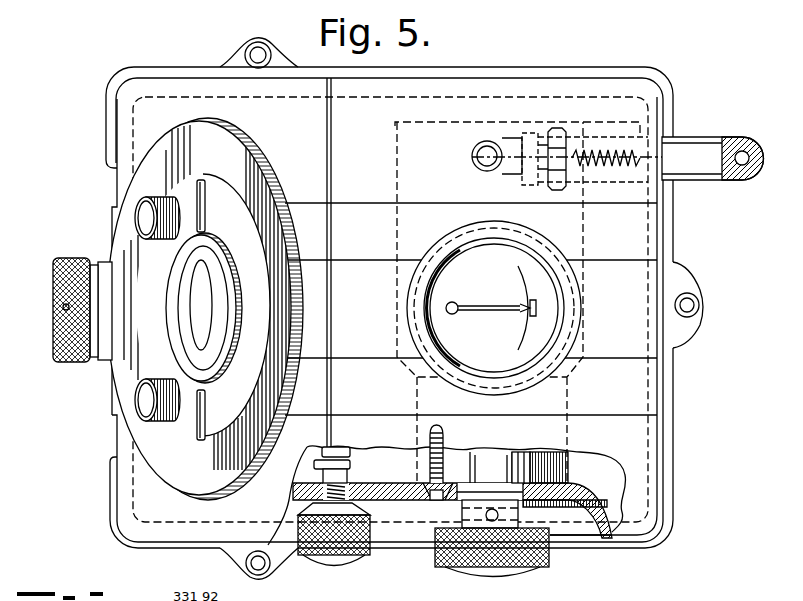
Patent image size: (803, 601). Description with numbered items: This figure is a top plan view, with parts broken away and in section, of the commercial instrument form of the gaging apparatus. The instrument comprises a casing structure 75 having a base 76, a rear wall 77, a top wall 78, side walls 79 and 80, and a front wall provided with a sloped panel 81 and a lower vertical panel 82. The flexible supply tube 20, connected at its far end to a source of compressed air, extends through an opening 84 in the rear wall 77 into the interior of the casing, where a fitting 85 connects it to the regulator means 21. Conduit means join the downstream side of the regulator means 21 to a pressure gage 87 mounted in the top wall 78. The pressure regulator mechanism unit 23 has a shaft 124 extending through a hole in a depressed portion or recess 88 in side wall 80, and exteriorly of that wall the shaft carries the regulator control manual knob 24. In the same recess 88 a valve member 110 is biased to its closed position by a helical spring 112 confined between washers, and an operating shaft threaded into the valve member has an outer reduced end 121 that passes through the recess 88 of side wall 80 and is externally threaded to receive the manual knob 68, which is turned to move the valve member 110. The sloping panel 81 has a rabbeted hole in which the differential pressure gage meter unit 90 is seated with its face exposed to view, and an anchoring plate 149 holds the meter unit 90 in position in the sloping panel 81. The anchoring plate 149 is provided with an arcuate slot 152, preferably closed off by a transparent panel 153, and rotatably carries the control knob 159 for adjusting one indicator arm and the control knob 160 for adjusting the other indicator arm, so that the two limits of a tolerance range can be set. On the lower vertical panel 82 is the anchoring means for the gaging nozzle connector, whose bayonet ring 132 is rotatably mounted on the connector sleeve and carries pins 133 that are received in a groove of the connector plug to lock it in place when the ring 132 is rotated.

The flexible supply tube 20 is at (700, 137).
The regulator means 21 is at (598, 324).
The pressure regulator mechanism unit 23 is at (579, 464).
The regulator control manual knob 24 is at (535, 568).
The manual knob 68 is at (352, 555).
The casing structure 75 is at (654, 73).
The base 76 is at (616, 549).
The rear wall 77 is at (665, 243).
The top wall 78 is at (636, 447).
The side wall 79 is at (487, 76).
The side wall 80 is at (190, 545).
The sloped panel 81 is at (195, 86).
The lower vertical panel 82 is at (112, 178).
The opening 84 is at (657, 215).
The fitting 85 is at (538, 133).
The pressure gage 87 is at (470, 302).
The depressed portion or recess 88 is at (418, 499).
The differential pressure gage meter unit 90 is at (122, 382).
The valve member 110 is at (345, 450).
The helical spring 112 is at (355, 458).
The outer reduced end 121 is at (372, 498).
The shaft 124 is at (514, 468).
The bayonet ring 132 is at (62, 258).
The pins 133 is at (63, 311).
The anchoring plate 149 is at (143, 438).
The arcuate slot 152 is at (212, 186).
The transparent panel 153 is at (232, 196).
The control knob 159 is at (152, 379).
The control knob 160 is at (163, 198).